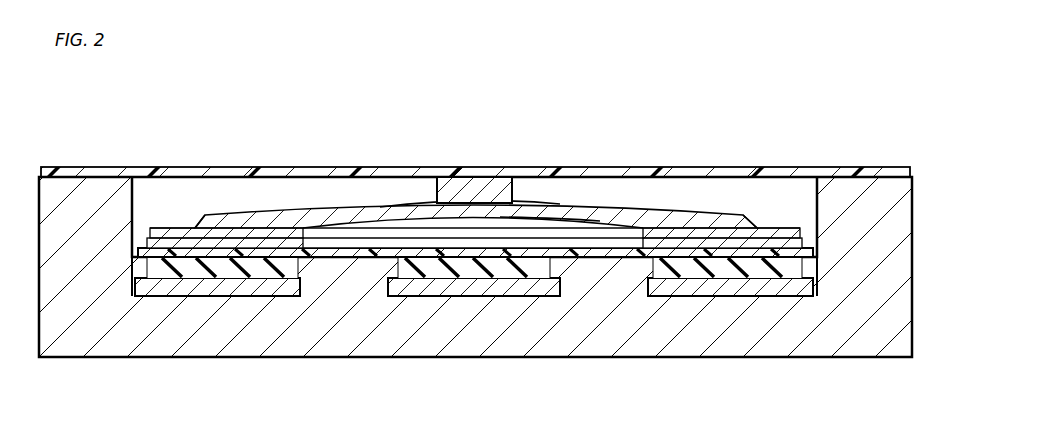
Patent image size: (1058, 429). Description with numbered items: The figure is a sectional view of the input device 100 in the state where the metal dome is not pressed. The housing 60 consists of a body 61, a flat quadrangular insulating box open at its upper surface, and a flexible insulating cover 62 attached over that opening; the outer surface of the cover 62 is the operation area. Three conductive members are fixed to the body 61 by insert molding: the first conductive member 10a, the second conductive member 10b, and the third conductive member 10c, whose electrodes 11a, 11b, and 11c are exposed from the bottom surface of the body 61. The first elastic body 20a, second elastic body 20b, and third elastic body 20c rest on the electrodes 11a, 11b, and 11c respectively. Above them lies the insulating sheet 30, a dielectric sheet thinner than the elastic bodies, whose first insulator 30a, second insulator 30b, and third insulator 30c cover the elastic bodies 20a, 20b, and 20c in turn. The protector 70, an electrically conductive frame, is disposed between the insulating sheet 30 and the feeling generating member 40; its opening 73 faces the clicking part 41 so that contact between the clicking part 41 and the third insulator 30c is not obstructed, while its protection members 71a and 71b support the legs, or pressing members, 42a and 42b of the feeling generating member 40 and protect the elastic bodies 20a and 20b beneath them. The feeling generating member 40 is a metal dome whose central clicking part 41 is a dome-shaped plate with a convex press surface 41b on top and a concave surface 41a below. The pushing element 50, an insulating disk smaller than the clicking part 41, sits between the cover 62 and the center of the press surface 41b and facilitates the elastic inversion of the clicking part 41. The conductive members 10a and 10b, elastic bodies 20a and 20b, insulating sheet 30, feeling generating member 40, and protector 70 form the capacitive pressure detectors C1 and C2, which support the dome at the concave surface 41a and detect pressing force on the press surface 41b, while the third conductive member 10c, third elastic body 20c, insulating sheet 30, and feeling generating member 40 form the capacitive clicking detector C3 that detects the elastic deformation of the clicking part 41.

The input device 100 is at (713, 98).
The housing 60 is at (128, 110).
The body 61 is at (54, 200).
The cover 62 is at (121, 173).
The first conductive member 10a is at (150, 290).
The second conductive member 10b is at (667, 292).
The third conductive member 10c is at (400, 292).
The electrode 11a is at (290, 290).
The electrode 11b is at (803, 292).
The electrode 11c is at (550, 292).
The first elastic body 20a is at (205, 268).
The second elastic body 20b is at (742, 270).
The third elastic body 20c is at (452, 270).
The first pressure detector C1 is at (243, 300).
The second pressure detector C2 is at (708, 300).
The clicking detector C3 is at (505, 300).
The insulating sheet 30 is at (661, 250).
The first insulator 30a is at (250, 250).
The second insulator 30b is at (757, 250).
The third insulator 30c is at (465, 251).
The feeling generating member 40 is at (501, 181).
The clicking part 41 is at (345, 211).
The concave surface 41a is at (556, 220).
The press surface 41b is at (413, 214).
The pressing member 42a is at (179, 232).
The pressing member 42b is at (795, 222).
The pushing element 50 is at (492, 184).
The protector 70 is at (693, 243).
The first protection member 71a is at (222, 236).
The second protection member 71b is at (731, 233).
The opening 73 is at (380, 241).